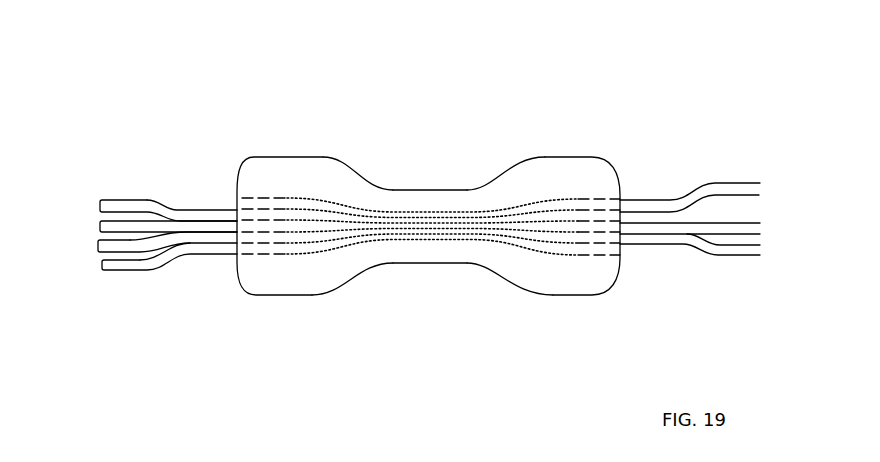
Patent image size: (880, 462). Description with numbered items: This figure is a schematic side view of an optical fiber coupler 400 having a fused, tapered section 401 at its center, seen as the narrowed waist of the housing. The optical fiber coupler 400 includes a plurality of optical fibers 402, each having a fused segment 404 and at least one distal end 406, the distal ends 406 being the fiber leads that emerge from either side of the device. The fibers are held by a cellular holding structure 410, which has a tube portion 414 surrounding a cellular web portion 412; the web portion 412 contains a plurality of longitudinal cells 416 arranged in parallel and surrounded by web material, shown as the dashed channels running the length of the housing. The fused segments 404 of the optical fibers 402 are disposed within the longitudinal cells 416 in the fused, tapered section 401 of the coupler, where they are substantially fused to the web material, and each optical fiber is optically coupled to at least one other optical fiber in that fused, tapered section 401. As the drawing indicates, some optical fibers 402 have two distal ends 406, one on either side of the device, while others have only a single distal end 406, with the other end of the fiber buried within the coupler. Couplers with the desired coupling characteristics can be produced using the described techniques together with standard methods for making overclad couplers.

The optical fiber coupler 400 is at (218, 95).
The fused, tapered section 401 is at (345, 288).
The optical fibers 402 is at (130, 247).
The fused segment 404 is at (283, 137).
The distal end 406 is at (98, 202).
The cellular holding structure 410 is at (583, 295).
The cellular web portion 412 is at (292, 255).
The tube portion 414 is at (263, 278).
The longitudinal cells 416 is at (597, 208).